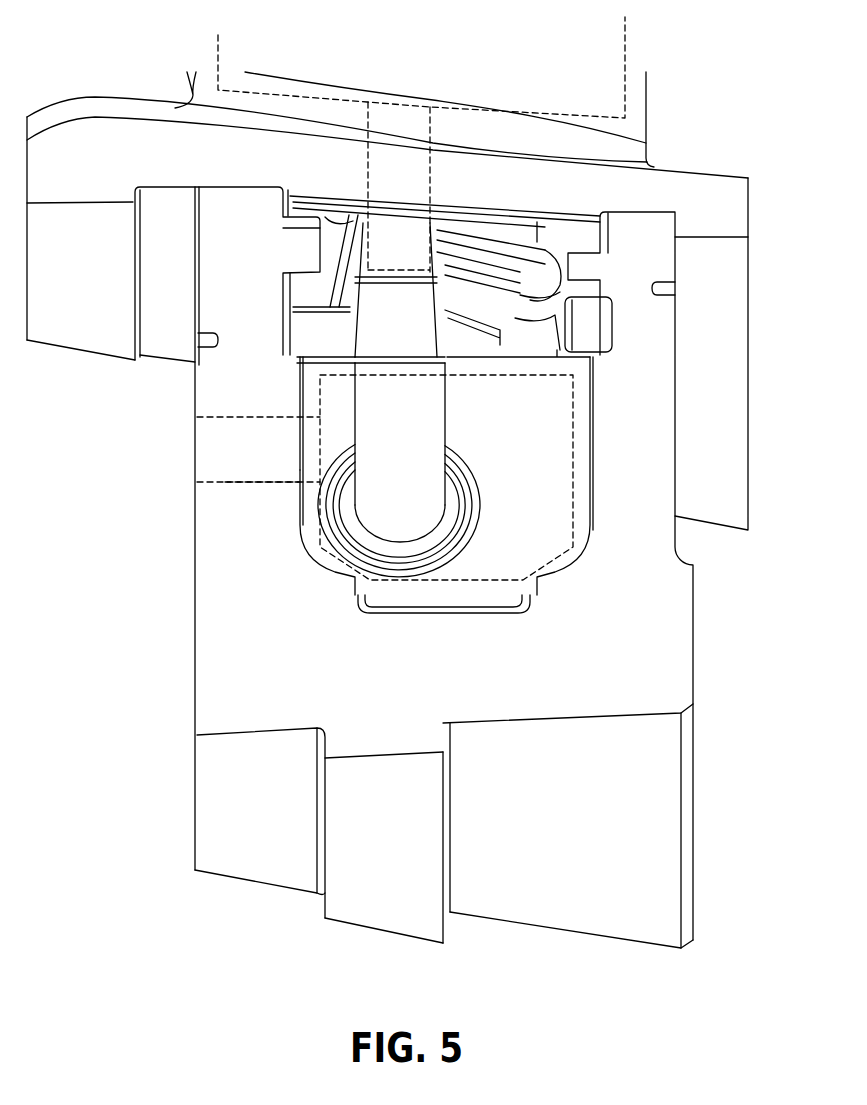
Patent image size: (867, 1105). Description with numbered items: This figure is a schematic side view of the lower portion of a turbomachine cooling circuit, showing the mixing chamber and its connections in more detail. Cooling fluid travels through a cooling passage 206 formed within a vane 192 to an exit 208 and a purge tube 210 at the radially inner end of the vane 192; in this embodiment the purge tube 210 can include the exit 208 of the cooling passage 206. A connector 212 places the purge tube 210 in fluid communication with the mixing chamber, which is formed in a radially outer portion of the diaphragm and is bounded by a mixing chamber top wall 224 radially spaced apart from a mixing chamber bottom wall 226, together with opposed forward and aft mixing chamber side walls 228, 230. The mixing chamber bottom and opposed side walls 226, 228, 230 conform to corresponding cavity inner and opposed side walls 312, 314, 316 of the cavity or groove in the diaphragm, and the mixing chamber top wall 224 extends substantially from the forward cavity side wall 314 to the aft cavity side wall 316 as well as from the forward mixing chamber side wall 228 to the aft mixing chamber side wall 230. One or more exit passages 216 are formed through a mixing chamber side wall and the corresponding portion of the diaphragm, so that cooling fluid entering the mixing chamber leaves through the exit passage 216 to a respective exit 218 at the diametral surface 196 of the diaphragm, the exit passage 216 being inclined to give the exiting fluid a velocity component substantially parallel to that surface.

The vane 192 is at (648, 125).
The diametral surface of diaphragm 196 is at (203, 405).
The cooling passage 206 is at (627, 52).
The exit 208 is at (434, 128).
The purge tube 210 is at (437, 181).
The connector 212 is at (418, 442).
The exit passage 216 is at (233, 482).
The exit 218 is at (207, 452).
The mixing chamber top wall 224 is at (513, 367).
The mixing chamber bottom wall 226 is at (462, 588).
The forward mixing chamber side wall 228 is at (300, 527).
The aft mixing chamber side wall 230 is at (590, 417).
The cavity inner wall 312 is at (525, 665).
The forward cavity side wall 314 is at (225, 373).
The aft cavity side wall 316 is at (652, 468).